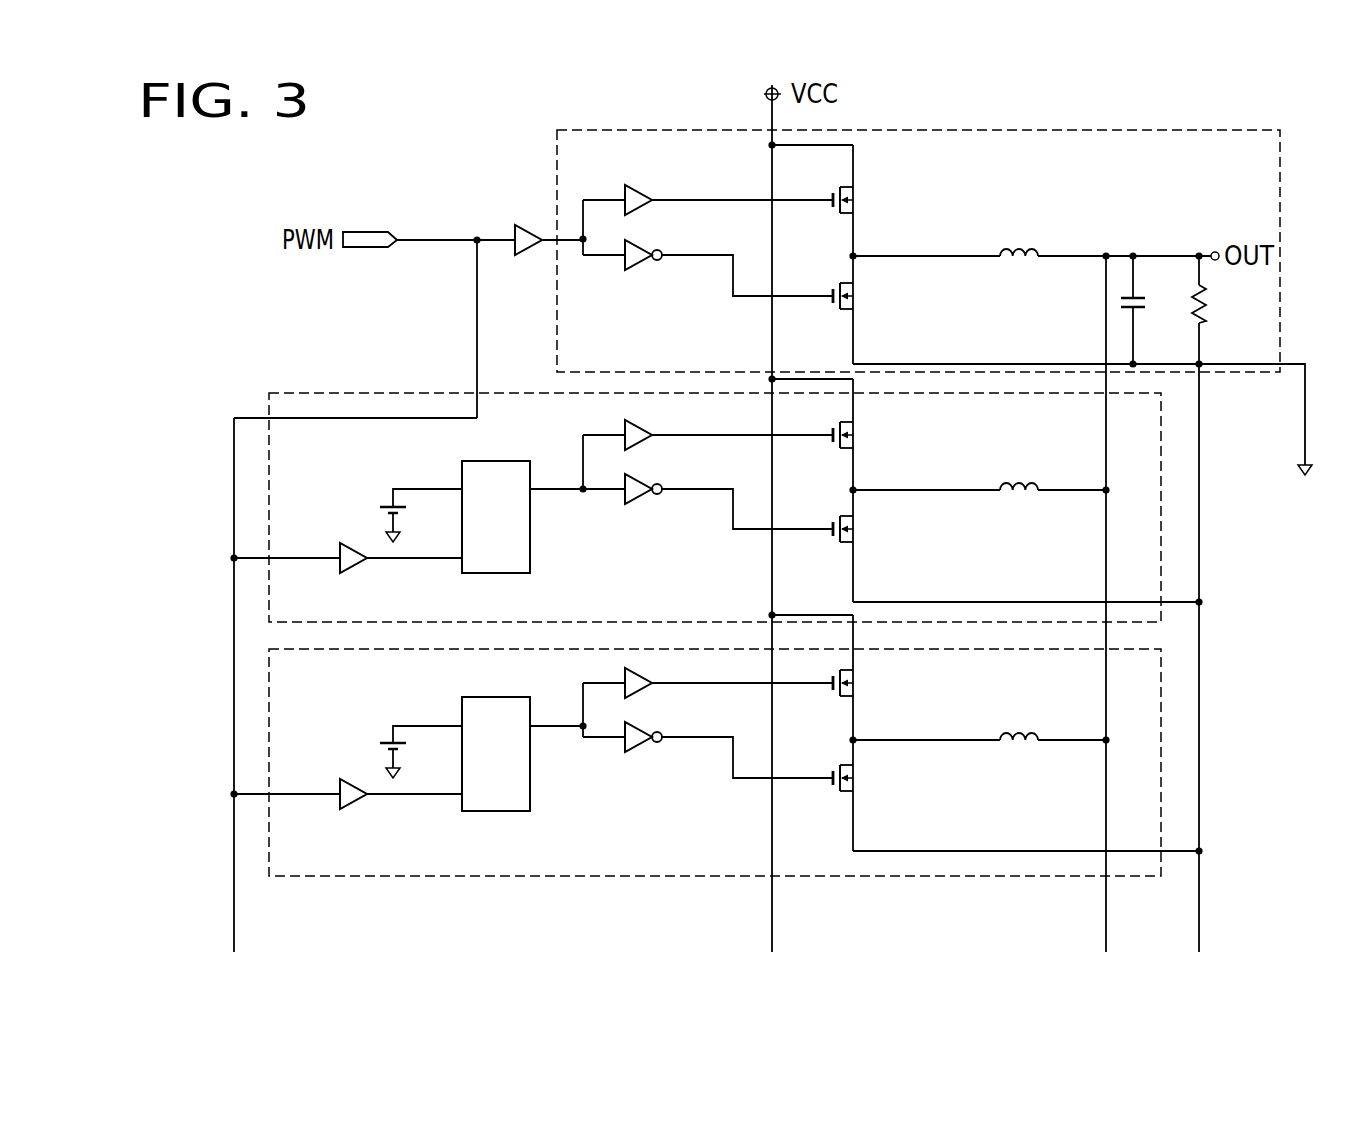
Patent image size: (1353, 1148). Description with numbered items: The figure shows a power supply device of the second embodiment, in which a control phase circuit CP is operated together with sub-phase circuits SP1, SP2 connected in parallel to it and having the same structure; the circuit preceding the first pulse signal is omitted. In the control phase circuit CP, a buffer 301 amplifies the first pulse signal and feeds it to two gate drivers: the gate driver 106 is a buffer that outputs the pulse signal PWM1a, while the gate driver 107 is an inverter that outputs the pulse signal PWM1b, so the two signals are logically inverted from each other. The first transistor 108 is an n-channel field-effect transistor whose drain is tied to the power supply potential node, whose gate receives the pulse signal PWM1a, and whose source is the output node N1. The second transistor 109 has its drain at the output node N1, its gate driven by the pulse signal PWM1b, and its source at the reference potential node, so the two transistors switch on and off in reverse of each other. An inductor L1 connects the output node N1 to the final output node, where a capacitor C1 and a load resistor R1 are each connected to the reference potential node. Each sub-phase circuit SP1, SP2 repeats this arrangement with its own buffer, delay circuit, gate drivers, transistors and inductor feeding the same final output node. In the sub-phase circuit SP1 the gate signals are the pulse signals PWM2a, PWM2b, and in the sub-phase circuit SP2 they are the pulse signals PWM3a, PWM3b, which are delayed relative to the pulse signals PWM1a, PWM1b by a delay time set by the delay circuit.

The buffer 301 is at (535, 225).
The gate driver 106 is at (640, 188).
The gate driver 107 is at (640, 270).
The first transistor 108 is at (856, 197).
The second transistor 109 is at (856, 301).
The output node N1 is at (857, 259).
The inductor L1 is at (1017, 265).
The capacitor C1 is at (1145, 300).
The load resistor R1 is at (1207, 302).
The control phase circuit CP is at (1163, 131).
The pulse signal PWM1a is at (722, 205).
The pulse signal PWM1b is at (738, 298).
The sub-phase circuit SP1 is at (1163, 540).
The sub-phase circuit SP2 is at (1163, 743).
The pulse signal PWM2a is at (800, 440).
The pulse signal PWM2b is at (805, 533).
The pulse signal PWM3a is at (800, 688).
The pulse signal PWM3b is at (805, 782).